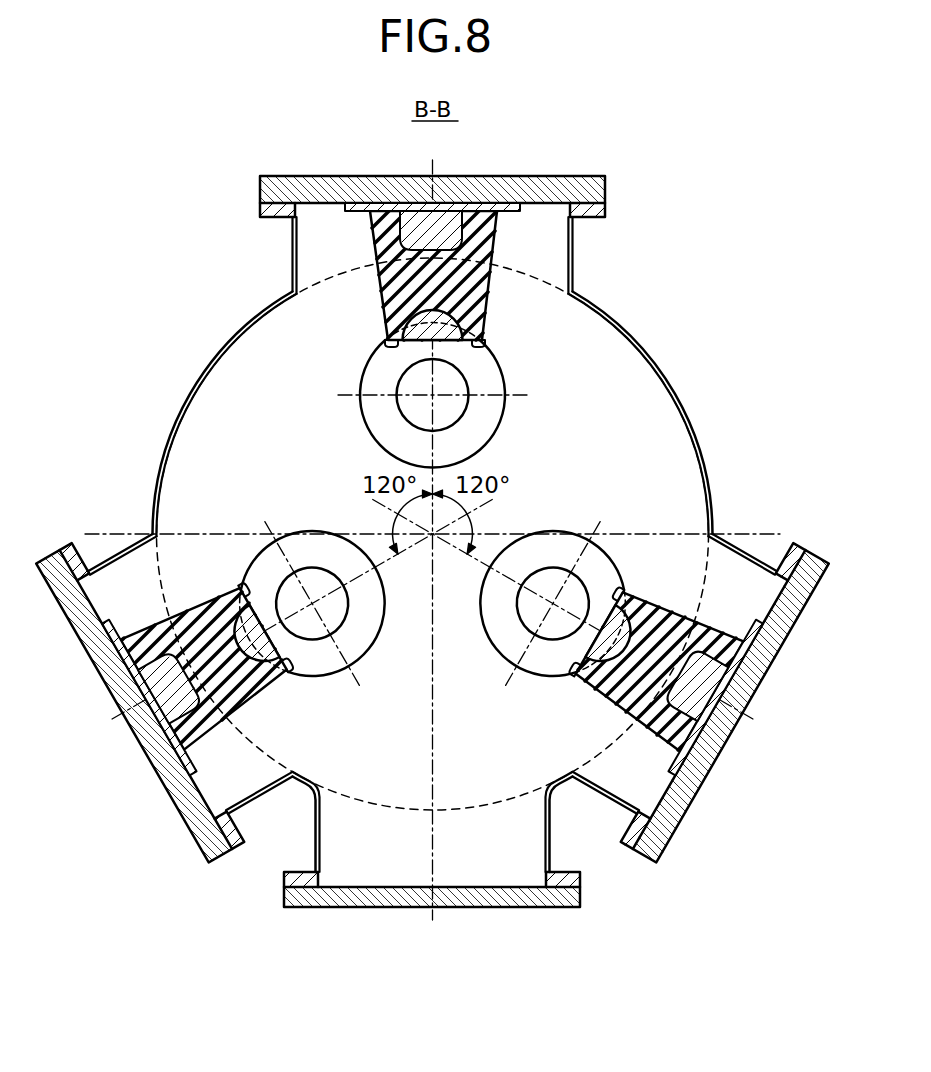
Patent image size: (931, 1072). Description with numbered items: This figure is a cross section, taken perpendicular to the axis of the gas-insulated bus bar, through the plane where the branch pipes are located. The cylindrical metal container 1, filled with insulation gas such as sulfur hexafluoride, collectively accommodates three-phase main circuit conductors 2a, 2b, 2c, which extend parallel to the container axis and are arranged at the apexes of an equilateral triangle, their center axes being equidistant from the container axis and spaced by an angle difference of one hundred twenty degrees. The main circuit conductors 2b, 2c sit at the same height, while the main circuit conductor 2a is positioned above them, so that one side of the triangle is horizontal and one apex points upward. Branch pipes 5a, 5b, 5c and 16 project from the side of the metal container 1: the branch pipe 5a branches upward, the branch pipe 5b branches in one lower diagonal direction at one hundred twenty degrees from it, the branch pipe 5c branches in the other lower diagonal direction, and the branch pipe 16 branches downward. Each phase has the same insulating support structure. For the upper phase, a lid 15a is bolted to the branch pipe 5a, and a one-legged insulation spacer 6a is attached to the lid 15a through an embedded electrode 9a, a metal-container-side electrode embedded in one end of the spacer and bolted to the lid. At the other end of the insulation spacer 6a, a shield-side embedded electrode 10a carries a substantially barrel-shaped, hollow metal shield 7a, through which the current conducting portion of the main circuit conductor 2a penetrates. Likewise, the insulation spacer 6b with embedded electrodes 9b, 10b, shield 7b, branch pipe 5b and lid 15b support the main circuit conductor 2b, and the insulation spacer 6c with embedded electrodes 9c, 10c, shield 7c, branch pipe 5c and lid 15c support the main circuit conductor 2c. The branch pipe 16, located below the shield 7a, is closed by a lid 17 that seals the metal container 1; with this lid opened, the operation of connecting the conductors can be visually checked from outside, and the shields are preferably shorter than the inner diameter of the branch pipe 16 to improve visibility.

The metal container 1 is at (688, 410).
The main circuit conductor 2a is at (398, 413).
The main circuit conductor 2b is at (517, 621).
The main circuit conductor 2c is at (348, 621).
The branch pipe 5a is at (574, 245).
The branch pipe 5b is at (753, 553).
The branch pipe 5c is at (262, 800).
The insulation spacer 6a is at (470, 292).
The insulation spacer 6b is at (618, 690).
The insulation spacer 6c is at (247, 690).
The shield 7a is at (503, 420).
The shield 7b is at (563, 534).
The shield 7c is at (302, 534).
The embedded electrode 9a is at (450, 210).
The embedded electrode 9b is at (705, 708).
The embedded electrode 9c is at (160, 700).
The embedded electrode 10a is at (455, 327).
The embedded electrode 10b is at (630, 632).
The embedded electrode 10c is at (235, 632).
The lid 15a is at (562, 181).
The lid 15b is at (663, 832).
The lid 15c is at (200, 830).
The branch pipe 16 is at (553, 848).
The lid 17 is at (520, 895).